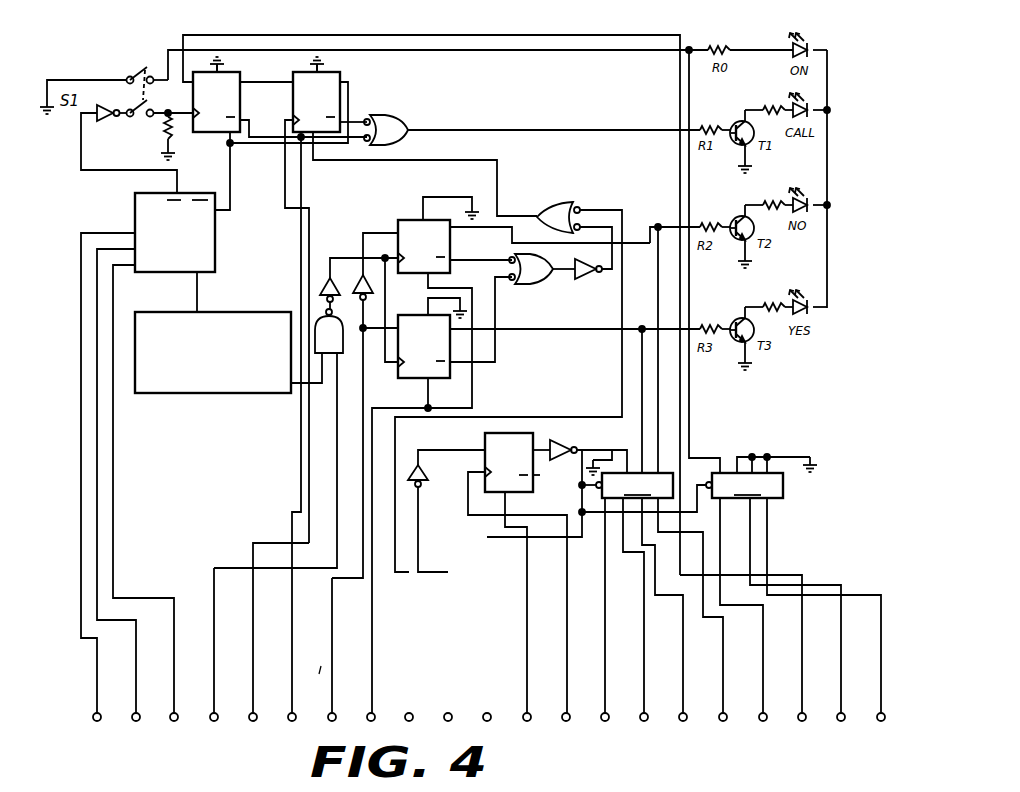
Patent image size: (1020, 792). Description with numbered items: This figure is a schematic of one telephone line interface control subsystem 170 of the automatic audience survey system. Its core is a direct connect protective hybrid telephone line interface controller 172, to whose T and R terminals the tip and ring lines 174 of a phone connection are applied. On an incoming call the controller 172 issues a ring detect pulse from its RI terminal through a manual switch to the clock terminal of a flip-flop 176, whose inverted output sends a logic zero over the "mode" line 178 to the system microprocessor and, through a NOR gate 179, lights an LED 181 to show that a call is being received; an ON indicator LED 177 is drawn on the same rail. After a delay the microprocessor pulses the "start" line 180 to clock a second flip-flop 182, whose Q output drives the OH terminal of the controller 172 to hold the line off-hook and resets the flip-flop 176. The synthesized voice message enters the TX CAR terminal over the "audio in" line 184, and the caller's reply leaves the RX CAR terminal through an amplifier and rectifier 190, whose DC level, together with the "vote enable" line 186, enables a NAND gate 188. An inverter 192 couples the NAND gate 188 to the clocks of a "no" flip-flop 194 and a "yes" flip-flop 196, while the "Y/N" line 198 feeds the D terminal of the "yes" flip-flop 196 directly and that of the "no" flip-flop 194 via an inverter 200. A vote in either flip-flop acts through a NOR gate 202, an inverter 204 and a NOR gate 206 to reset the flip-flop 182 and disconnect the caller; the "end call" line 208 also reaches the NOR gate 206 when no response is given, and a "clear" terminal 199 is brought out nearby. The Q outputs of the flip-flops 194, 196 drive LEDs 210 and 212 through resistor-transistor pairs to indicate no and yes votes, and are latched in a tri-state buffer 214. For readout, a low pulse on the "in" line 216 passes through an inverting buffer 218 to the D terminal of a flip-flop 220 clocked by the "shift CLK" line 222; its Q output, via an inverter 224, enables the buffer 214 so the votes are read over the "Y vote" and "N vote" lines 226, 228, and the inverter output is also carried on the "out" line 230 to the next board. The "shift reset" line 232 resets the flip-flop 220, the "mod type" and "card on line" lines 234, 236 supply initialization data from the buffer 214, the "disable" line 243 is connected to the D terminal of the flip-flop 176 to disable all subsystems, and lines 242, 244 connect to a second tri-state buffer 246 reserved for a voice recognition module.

The telephone line interface control subsystem 170 is at (810, 360).
The telephone line interface controller 172 is at (135, 205).
The tip and ring lines 174 is at (136, 643).
The flip-flop 176 is at (236, 72).
The ON light emitting diode 177 is at (790, 58).
The mode line 178 is at (280, 596).
The NOR gate 179 is at (395, 115).
The start line 180 is at (240, 596).
The LED 181 is at (807, 100).
The flip-flop 182 is at (343, 72).
The audio in line 184 is at (174, 624).
The vote enable line 186 is at (214, 582).
The NAND gate 188 is at (324, 318).
The amplifier and rectifier 190 is at (213, 314).
The inverter 192 is at (325, 276).
The 'no' flip-flop 194 is at (450, 241).
The 'yes' flip-flop 196 is at (420, 378).
The Y/N line 198 is at (320, 601).
The CLEAR terminal 199 is at (351, 612).
The inverter 200 is at (374, 282).
The NOR gate 202 is at (522, 284).
The inverter 204 is at (588, 278).
The NOR gate 206 is at (555, 203).
The end call line 208 is at (409, 600).
The LED 210 is at (807, 197).
The LED 212 is at (807, 300).
The tri-state buffer 214 is at (627, 485).
The in line 216 is at (433, 600).
The inverting buffer 218 is at (423, 468).
The flip-flop 220 is at (485, 436).
The shift CLK line 222 is at (546, 557).
The inverter 224 is at (562, 441).
The Y vote line 226 is at (661, 606).
The N vote line 228 is at (700, 616).
The out line 230 is at (478, 560).
The shift reset line 232 is at (510, 542).
The mod type line 234 is at (586, 547).
The card on line line 236 is at (623, 562).
The line 242 is at (745, 580).
The DISABLE terminal 243 is at (780, 597).
The line 244 is at (820, 616).
The second tri-state buffer 246 is at (858, 610).